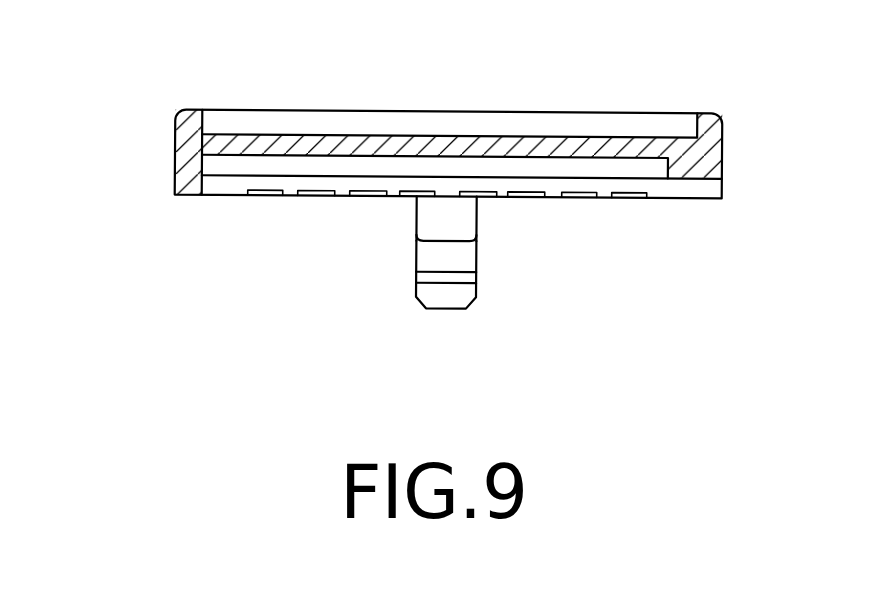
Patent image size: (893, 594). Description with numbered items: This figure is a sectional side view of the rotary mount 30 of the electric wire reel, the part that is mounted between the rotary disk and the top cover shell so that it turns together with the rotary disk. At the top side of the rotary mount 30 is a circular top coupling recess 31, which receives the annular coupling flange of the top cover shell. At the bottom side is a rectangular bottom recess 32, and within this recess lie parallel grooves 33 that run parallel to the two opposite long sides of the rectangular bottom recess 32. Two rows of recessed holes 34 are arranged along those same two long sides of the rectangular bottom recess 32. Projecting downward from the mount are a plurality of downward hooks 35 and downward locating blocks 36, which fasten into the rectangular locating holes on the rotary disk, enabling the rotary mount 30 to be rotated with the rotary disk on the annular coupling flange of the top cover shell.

The rotary mount 30 is at (173, 138).
The circular top coupling recess 31 is at (323, 123).
The rectangular bottom recess 32 is at (687, 192).
The parallel grooves 33 is at (583, 170).
The recessed holes 34 is at (620, 197).
The downward hooks 35 is at (452, 290).
The downward locating blocks 36 is at (430, 215).